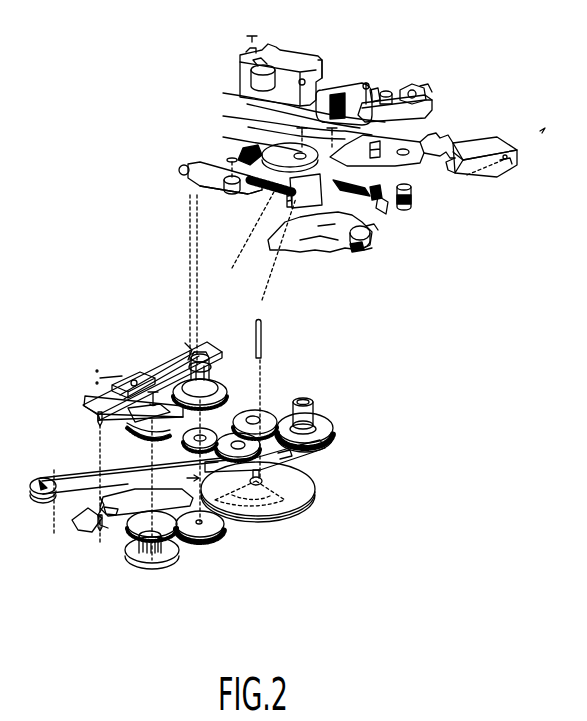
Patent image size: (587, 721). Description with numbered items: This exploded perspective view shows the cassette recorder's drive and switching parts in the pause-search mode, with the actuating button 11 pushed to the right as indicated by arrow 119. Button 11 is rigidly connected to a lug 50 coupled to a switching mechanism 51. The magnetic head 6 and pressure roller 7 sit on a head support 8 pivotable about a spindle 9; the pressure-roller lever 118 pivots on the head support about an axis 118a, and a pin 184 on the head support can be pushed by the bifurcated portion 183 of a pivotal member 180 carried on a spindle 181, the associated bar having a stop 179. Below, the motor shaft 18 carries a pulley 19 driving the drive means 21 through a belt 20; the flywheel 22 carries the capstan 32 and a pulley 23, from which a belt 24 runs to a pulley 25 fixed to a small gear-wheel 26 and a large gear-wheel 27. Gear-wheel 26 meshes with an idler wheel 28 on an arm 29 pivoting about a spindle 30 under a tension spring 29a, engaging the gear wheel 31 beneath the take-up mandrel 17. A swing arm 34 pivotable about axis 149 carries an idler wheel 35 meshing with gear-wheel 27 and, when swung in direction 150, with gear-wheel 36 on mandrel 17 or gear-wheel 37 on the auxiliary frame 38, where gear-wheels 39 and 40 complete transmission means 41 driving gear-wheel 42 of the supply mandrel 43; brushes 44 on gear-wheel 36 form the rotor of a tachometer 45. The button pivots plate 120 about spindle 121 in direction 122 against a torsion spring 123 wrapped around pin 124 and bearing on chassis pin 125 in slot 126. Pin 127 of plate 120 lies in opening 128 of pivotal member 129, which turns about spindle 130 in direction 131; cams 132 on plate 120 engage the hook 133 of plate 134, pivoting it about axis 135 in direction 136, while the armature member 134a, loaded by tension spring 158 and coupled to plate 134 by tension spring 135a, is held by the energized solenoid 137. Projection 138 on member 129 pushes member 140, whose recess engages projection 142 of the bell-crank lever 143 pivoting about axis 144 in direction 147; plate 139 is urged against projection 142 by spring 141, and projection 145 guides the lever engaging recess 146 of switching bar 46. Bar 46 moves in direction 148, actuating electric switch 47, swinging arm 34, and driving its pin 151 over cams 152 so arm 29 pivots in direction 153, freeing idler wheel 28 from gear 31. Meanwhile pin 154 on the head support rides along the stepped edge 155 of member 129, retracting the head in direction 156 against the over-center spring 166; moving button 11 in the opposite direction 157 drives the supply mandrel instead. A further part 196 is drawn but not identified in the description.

The magnetic head 6 is at (343, 84).
The pressure roller 7 is at (250, 76).
The head support 8 is at (372, 88).
The spindle 9 is at (246, 50).
The actuating button 11 is at (512, 160).
The take-up mandrel 17 is at (204, 357).
The motor shaft 18 is at (48, 479).
The pulley 19 is at (42, 499).
The belt 20 is at (85, 476).
The drive means 21 is at (150, 459).
The flywheel 22 is at (305, 492).
The pulley 23 is at (308, 514).
The belt 24 is at (186, 545).
The pulley 25 is at (166, 562).
The small gear-wheel 26 is at (147, 554).
The large gear-wheel 27 is at (136, 534).
The idler wheel 28 is at (139, 441).
The arm 29 is at (150, 498).
The tension spring 29a is at (100, 497).
The spindle 30 is at (185, 477).
The gear wheel 31 is at (222, 528).
The capstan 32 is at (263, 326).
The swing arm 34 is at (132, 412).
The idler wheel 35 is at (210, 428).
The gear-wheel 36 is at (214, 392).
The gear-wheel 37 is at (238, 433).
The auxiliary frame 38 is at (334, 430).
The gear-wheel 39 is at (262, 482).
The gear-wheel 40 is at (262, 414).
The transmission means 41 is at (296, 455).
The gear-wheel 42 is at (333, 445).
The supply mandrel 43 is at (312, 404).
The brushes 44 is at (182, 360).
The tachometer 45 is at (212, 381).
The switching bar 46 is at (138, 370).
The electric switch 47 is at (108, 377).
The lug 50 is at (478, 113).
The switching mechanism 51 is at (452, 277).
The pressure-roller lever 118 is at (272, 53).
The axis 118a is at (306, 55).
The arrow 119 is at (545, 128).
The plate 120 is at (430, 160).
The spindle 121 is at (442, 156).
The arrow 122 is at (416, 164).
The torsion spring 123 is at (404, 209).
The pin 124 is at (376, 187).
The pin 125 is at (380, 214).
The slot 126 is at (406, 166).
The pin 127 is at (398, 170).
The opening 128 is at (358, 253).
The pivotal member 129 is at (305, 285).
The spindle 130 is at (286, 205).
The arrow 131 is at (270, 224).
The cams 132 is at (293, 102).
The hook 133 is at (293, 110).
The plate 134 is at (287, 120).
The armature member 134a is at (253, 293).
The axis 135 is at (312, 152).
The tension spring 135a is at (319, 232).
The arrow 136 is at (376, 140).
The solenoid 137 is at (220, 292).
The projection 138 is at (282, 200).
The plate 139 is at (240, 250).
The member 140 is at (236, 153).
The spring 141 is at (220, 194).
The projection 142 is at (227, 160).
The bell-crank lever 143 is at (288, 204).
The pivotal axis 144 is at (205, 186).
The projection 145 is at (179, 170).
The recess 146 is at (190, 345).
The arrow 147 is at (230, 194).
The arrow 148 is at (168, 347).
The pivotal axis 149 is at (112, 398).
The arrow 150 is at (118, 404).
The pin 151 is at (96, 416).
The cams 152 is at (110, 506).
The arrow 153 is at (80, 528).
The pin 154 is at (355, 242).
The edge 155 is at (352, 249).
The arrow 156 is at (388, 90).
The arrow 157 is at (488, 172).
The tension spring 158 is at (372, 240).
The over-center spring 166 is at (368, 250).
The stop 179 is at (422, 88).
The pivotal member 180 is at (428, 90).
The spindle 181 is at (430, 102).
The bifurcated portion 183 is at (396, 116).
The pin 184 is at (366, 82).
The block 196 is at (405, 87).